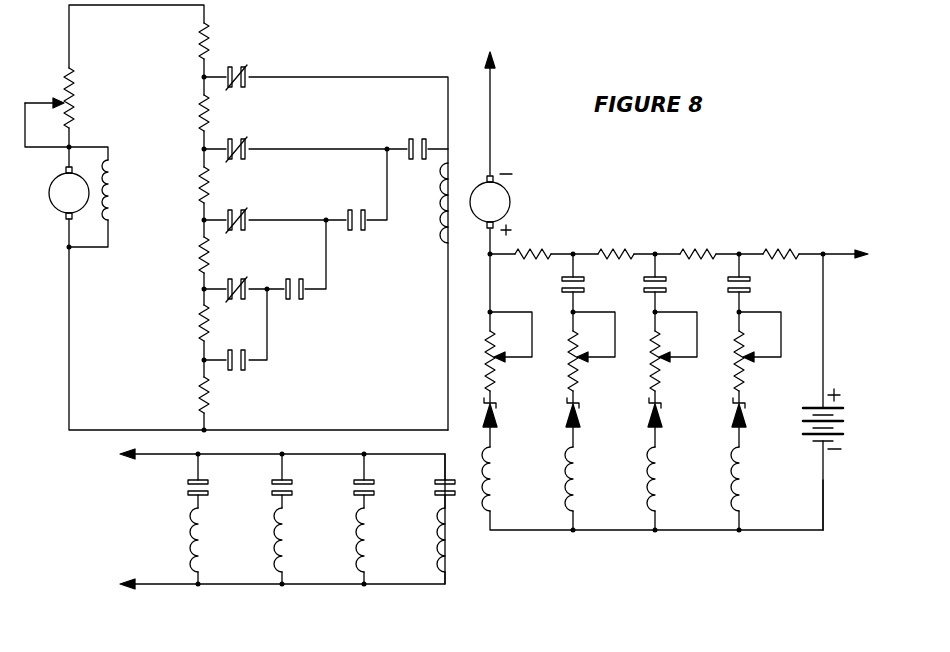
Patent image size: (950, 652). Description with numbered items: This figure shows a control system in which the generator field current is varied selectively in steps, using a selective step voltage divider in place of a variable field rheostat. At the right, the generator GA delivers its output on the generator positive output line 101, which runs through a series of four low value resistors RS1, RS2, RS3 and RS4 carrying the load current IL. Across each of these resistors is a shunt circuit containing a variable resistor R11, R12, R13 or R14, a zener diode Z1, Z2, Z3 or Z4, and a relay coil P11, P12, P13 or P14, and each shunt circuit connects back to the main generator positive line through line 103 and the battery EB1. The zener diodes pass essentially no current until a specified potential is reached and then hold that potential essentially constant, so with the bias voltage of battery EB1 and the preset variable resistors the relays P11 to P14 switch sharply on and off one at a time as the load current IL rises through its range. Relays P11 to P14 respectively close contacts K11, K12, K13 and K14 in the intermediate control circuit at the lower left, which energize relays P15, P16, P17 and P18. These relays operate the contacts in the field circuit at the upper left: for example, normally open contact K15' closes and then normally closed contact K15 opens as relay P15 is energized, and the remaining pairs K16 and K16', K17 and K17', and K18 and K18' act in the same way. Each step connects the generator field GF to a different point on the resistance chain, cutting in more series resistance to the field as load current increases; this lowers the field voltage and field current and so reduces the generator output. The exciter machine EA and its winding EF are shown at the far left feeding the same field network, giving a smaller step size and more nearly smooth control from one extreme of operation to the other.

The exciter armature EA is at (69, 193).
The exciter field winding EF is at (110, 197).
The generator armature GA is at (490, 202).
The generator field winding GF is at (445, 200).
The contact K11 is at (187, 493).
The contact K12 is at (271, 493).
The contact K13 is at (353, 493).
The contact K14 is at (435, 493).
The normally closed contact K15 is at (254, 88).
The normally closed contact K16 is at (251, 162).
The normally closed contact K17 is at (252, 232).
The normally closed contact K18 is at (238, 307).
The normally open contact K15' is at (419, 132).
The normally open contact K16' is at (361, 205).
The normally open contact K17' is at (313, 304).
The normally open contact K18' is at (255, 376).
The relay coil P11 is at (496, 472).
The relay coil P12 is at (579, 480).
The relay coil P13 is at (661, 480).
The relay coil P14 is at (745, 483).
The relay P15 is at (196, 546).
The relay P16 is at (280, 547).
The relay P17 is at (362, 547).
The relay P18 is at (443, 547).
The variable resistor R11 is at (500, 373).
The variable resistor R12 is at (583, 373).
The variable resistor R13 is at (665, 373).
The variable resistor R14 is at (749, 373).
The low value resistor RS1 is at (540, 250).
The low value resistor RS2 is at (622, 250).
The low value resistor RS3 is at (704, 250).
The low value resistor RS4 is at (787, 250).
The zener diode Z1 is at (499, 414).
The zener diode Z2 is at (582, 414).
The zener diode Z3 is at (664, 414).
The zener diode Z4 is at (748, 414).
The battery EB1 is at (838, 422).
The load current IL is at (481, 232).
The generator positive output line 101 is at (842, 252).
The line 103 is at (824, 505).